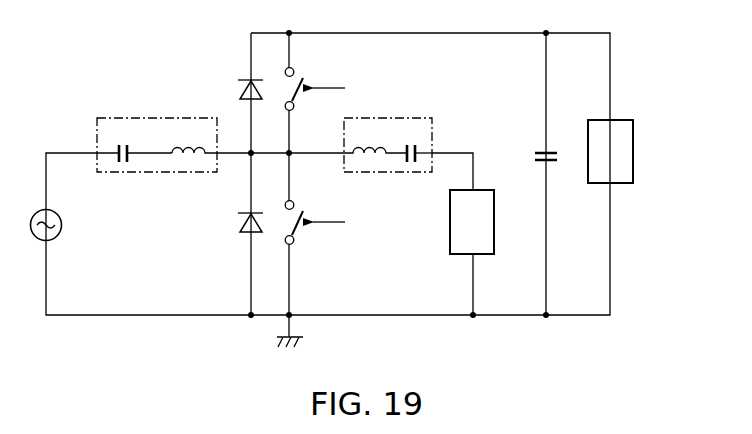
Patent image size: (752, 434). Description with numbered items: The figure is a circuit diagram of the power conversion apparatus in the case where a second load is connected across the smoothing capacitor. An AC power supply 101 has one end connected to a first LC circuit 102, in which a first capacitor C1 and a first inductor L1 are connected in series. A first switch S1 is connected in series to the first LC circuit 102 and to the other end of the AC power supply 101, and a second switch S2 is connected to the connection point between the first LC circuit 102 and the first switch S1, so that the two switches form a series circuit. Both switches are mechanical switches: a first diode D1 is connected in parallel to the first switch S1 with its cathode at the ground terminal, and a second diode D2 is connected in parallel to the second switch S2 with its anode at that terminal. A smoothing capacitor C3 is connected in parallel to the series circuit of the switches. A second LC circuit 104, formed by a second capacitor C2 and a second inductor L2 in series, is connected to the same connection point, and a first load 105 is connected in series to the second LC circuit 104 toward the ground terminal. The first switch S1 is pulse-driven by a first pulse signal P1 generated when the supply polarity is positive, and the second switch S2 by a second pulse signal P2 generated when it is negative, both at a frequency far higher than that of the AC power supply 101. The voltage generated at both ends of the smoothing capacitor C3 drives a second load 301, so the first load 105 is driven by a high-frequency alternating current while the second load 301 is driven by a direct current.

The AC power supply 101 is at (54, 211).
The first LC circuit 102 is at (157, 162).
The second LC circuit 104 is at (388, 163).
The first load 105 is at (494, 222).
The second load 301 is at (633, 152).
The first capacitor C1 is at (134, 141).
The first inductor L1 is at (194, 136).
The second inductor L2 is at (375, 136).
The second capacitor C2 is at (415, 141).
The smoothing capacitor C3 is at (554, 144).
The first diode D1 is at (238, 221).
The second diode D2 is at (238, 89).
The first switch S1 is at (305, 214).
The second switch S2 is at (305, 81).
The first pulse signal P1 is at (329, 234).
The second pulse signal P2 is at (329, 101).